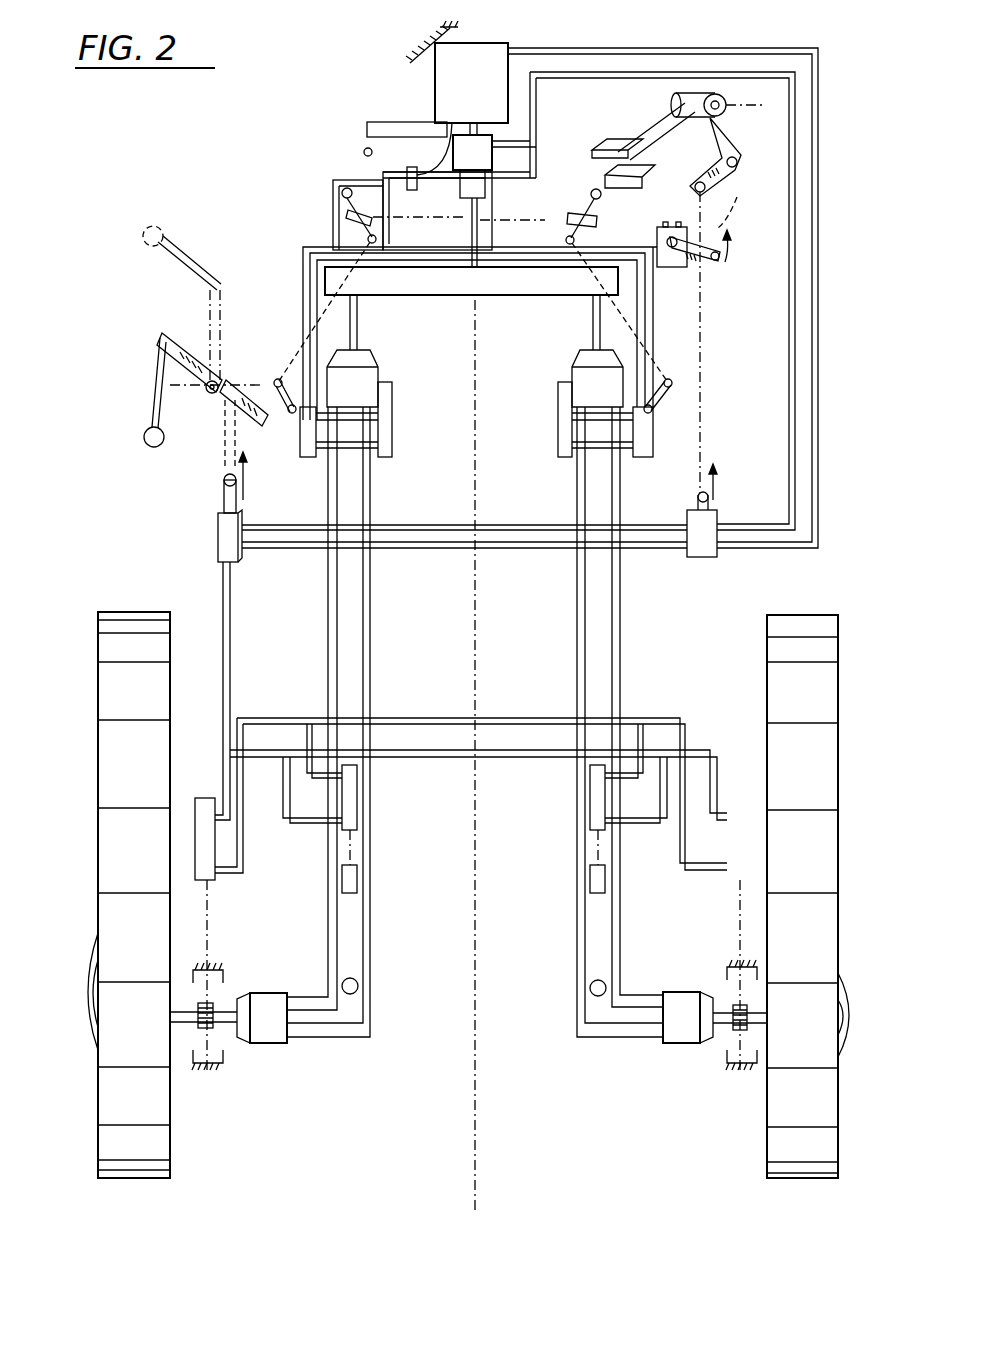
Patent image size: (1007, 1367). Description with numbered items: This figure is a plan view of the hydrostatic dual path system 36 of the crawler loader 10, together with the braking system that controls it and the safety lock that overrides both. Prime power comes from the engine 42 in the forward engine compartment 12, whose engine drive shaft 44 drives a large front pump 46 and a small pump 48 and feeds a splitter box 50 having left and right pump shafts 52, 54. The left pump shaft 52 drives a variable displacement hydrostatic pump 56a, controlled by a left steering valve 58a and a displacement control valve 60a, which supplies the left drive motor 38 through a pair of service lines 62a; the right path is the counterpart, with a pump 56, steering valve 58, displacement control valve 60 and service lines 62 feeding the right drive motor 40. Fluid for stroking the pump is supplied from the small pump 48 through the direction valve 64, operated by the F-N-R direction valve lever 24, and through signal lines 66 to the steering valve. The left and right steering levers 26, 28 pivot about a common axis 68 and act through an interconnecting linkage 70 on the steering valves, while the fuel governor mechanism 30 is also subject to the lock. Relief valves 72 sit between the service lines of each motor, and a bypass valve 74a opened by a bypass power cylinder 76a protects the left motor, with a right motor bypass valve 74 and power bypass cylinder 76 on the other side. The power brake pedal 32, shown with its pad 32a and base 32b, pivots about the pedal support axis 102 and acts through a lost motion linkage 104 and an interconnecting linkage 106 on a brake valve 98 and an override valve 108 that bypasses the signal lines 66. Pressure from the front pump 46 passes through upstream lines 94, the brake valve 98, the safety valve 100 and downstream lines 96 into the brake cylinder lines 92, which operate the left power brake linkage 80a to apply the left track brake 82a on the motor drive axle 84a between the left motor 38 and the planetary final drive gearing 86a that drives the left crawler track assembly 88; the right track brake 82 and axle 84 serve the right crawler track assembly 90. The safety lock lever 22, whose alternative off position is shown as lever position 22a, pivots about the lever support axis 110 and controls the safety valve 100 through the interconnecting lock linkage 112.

The hydrostatic crawler loader 10 is at (210, 165).
The forward engine compartment 12 is at (412, 60).
The safety lock lever 22 is at (155, 380).
The parking brake lever off position 22a is at (195, 255).
The hydrostatic F-N-R direction valve lever 24 is at (407, 176).
The left hydrostatic steering lever 26 is at (345, 205).
The right hydrostatic steering lever 28 is at (588, 196).
The fuel governor mechanism 30 is at (360, 150).
The power brake pedal 32 is at (616, 145).
The pedal pad 32a is at (588, 160).
The pedal base 32b is at (605, 184).
The hydrostatic dual path system 36 is at (290, 1102).
The left drive motor 38 is at (268, 993).
The right drive motor 40 is at (675, 992).
The engine 42 is at (435, 90).
The engine drive shaft 44 is at (477, 215).
The front pump 46 is at (503, 139).
The small pump 48 is at (485, 188).
The splitter box 50 is at (478, 293).
The left pump shaft 52 is at (357, 332).
The right pump shaft 54 is at (593, 328).
The right variable displacement pump 56 is at (572, 372).
The variable displacement hydrostatic pump 56a is at (368, 372).
The right steering valve 58 is at (688, 450).
The left steering valve 58a is at (316, 452).
The right swash plate 60 is at (558, 432).
The displacement control valve 60a is at (392, 432).
The right drive conduits 62 is at (577, 635).
The service lines 62a is at (372, 635).
The direction valve 64 is at (455, 132).
The signal lines 66 is at (442, 246).
The axis of common steering lever support 68 is at (500, 225).
The interconnecting linkage 70 is at (285, 358).
The relief valves 72 is at (358, 982).
The right motor bypass valve 74 is at (590, 880).
The bypass valve 74a is at (370, 862).
The power bypass cylinder 76 is at (628, 777).
The bypass power cylinder 76a is at (357, 798).
The left power brake linkage 80a is at (218, 897).
The right track brake 82 is at (728, 970).
The left track brake 82a is at (228, 972).
The right coupling 84 is at (720, 1028).
The motor drive axle 84a is at (183, 1025).
The planetary final drive gearing 86a is at (95, 960).
The left endless crawler track assembly 88 is at (128, 600).
The right endless crawler track assembly 90 is at (783, 612).
The brake cylinder lines 92 is at (445, 690).
The upstream lines 94 is at (808, 315).
The downstream lines 96 is at (240, 650).
The brake valve 98 is at (700, 560).
The safety valve 100 is at (216, 535).
The axis of pedal support 102 is at (660, 103).
The lost motion linkage 104 is at (706, 360).
The interconnecting linkage 106 is at (744, 219).
The override valve 108 is at (668, 225).
The axis of lever support 110 is at (170, 388).
The interconnecting lock linkage 112 is at (245, 412).